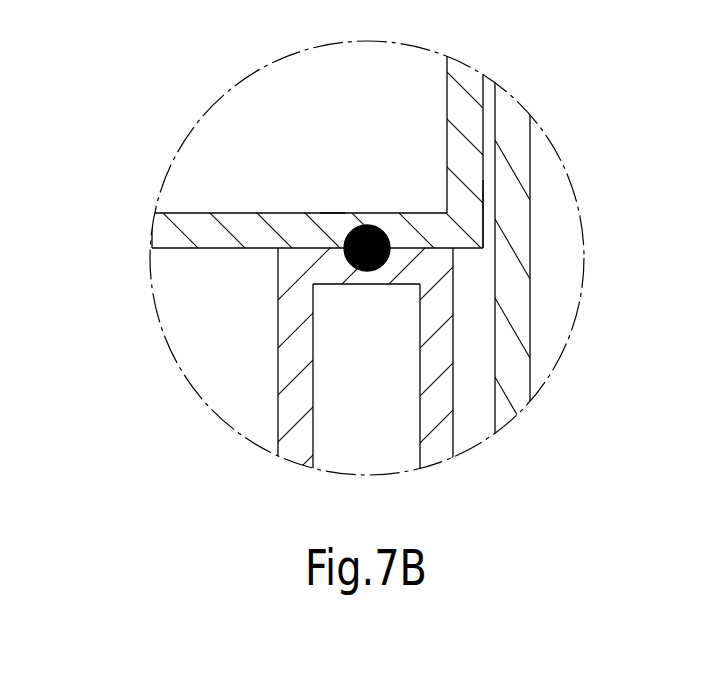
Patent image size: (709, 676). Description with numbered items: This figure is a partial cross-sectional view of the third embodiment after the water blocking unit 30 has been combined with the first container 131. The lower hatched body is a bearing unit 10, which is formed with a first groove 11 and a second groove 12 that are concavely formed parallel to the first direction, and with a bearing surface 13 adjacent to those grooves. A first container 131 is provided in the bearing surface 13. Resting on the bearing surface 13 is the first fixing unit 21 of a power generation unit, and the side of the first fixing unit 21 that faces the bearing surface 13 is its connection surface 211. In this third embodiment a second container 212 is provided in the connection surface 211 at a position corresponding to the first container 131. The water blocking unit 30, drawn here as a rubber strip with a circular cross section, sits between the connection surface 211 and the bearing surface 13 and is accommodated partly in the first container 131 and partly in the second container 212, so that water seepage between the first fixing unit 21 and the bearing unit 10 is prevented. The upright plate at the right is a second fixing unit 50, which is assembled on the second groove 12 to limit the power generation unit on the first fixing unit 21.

The bearing unit 10 is at (366, 379).
The first groove 11 is at (223, 365).
The second groove 12 is at (478, 364).
The bearing surface 13 is at (327, 354).
The first container 131 is at (367, 272).
The first fixing unit 21 is at (348, 275).
The connection surface 211 is at (435, 270).
The second container 212 is at (346, 228).
The water blocking unit 30 is at (367, 221).
The second fixing unit 50 is at (523, 168).